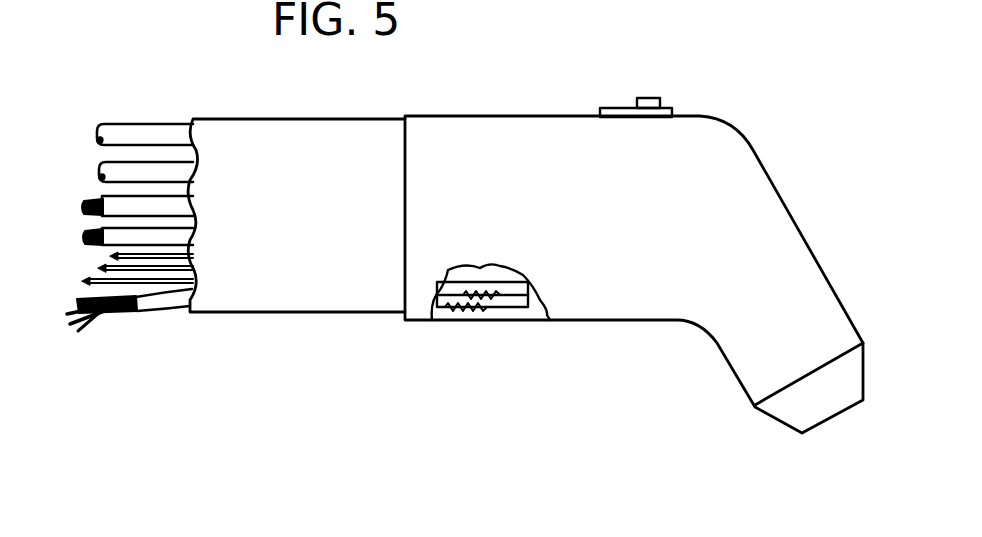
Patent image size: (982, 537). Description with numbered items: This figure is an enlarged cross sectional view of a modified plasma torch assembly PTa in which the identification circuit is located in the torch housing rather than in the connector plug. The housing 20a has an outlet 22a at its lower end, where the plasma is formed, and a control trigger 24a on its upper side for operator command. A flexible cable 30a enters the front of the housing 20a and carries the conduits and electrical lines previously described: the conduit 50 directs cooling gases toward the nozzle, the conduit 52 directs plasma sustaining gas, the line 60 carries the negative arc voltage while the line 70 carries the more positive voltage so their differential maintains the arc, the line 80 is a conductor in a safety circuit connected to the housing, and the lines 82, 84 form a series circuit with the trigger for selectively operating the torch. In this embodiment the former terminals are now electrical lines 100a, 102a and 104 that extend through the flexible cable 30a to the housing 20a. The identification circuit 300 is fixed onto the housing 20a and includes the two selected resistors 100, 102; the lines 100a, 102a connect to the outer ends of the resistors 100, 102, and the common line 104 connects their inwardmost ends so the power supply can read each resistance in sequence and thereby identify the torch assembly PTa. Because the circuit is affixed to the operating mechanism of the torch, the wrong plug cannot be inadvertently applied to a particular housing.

The torch assembly PTa is at (528, 263).
The housing 20a is at (750, 173).
The outlet 22a is at (833, 420).
The control trigger 24a is at (652, 95).
The flexible cable 30a is at (276, 124).
The conduit 50 is at (152, 132).
The conduit 52 is at (135, 172).
The line 60 is at (177, 208).
The line 70 is at (182, 238).
The electrical line 80 is at (195, 249).
The electrical line 82 is at (197, 267).
The electrical line 84 is at (195, 276).
The resistor 100 is at (493, 300).
The resistor 102 is at (462, 312).
The identification circuit 300 is at (478, 322).
The electrical line 100a is at (97, 317).
The electrical line 102a is at (107, 318).
The electrical line 104 is at (92, 322).